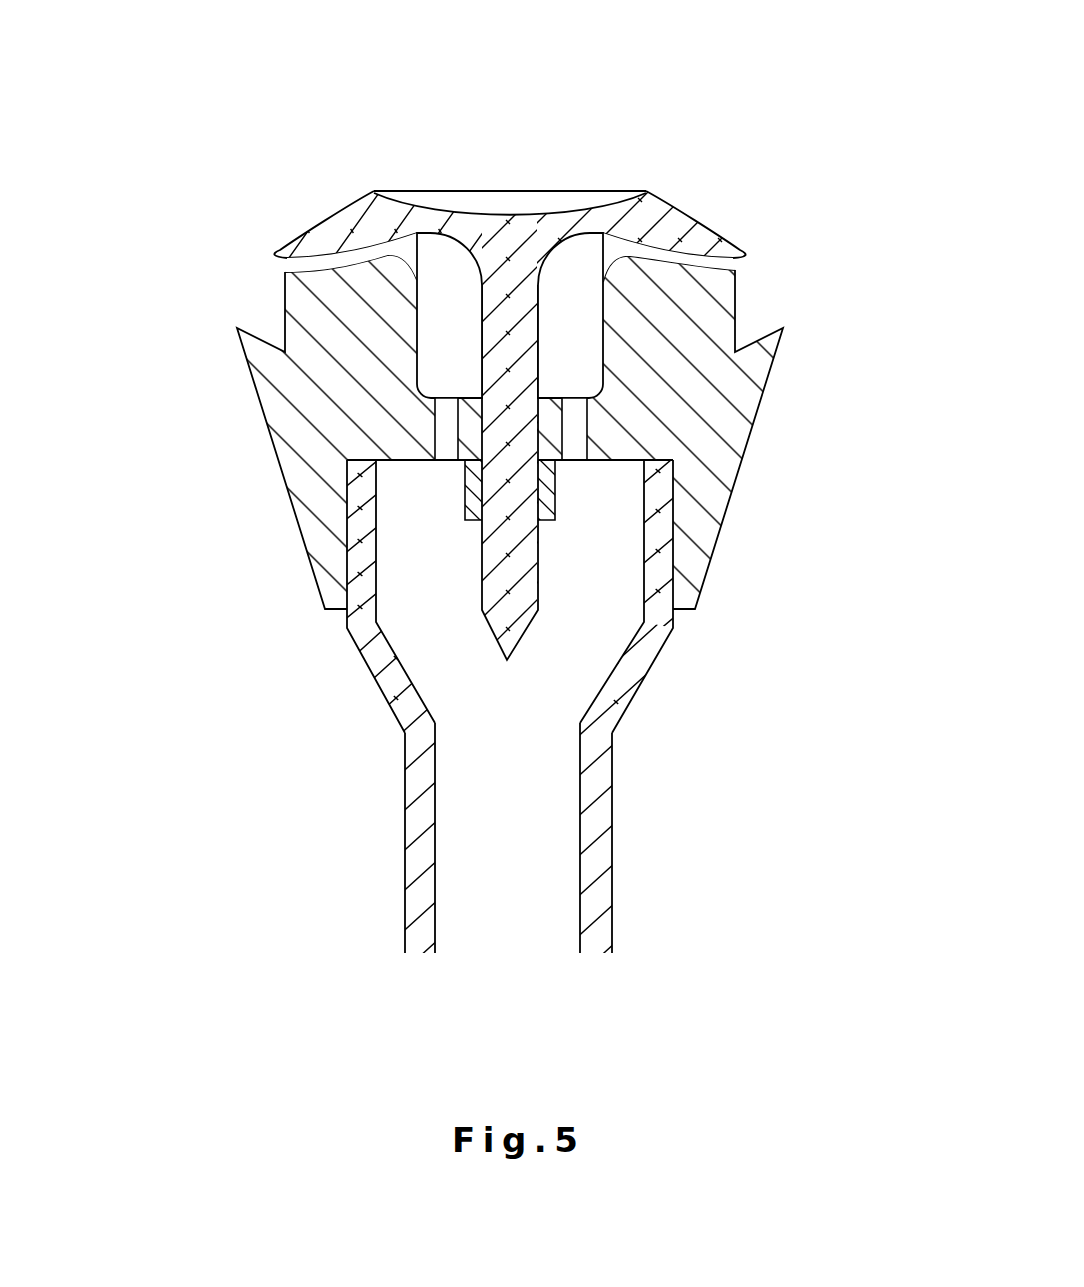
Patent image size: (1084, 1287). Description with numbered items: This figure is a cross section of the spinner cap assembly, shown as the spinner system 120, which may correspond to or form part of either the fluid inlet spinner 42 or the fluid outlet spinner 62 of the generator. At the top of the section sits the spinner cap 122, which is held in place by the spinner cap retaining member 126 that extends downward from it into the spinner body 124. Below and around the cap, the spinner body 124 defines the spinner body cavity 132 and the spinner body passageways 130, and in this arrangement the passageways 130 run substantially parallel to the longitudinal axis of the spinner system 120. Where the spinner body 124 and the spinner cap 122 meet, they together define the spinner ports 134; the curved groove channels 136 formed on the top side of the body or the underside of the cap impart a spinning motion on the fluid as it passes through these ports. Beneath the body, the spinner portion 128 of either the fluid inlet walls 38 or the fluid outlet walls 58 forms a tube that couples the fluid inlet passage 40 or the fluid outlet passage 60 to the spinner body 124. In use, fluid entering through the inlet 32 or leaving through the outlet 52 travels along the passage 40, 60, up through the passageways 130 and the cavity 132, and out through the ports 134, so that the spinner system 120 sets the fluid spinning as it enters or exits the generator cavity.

The spinner system 120 is at (456, 333).
The fluid inlet spinner 42 is at (456, 333).
The fluid outlet spinner 62 is at (456, 333).
The spinner cap 122 is at (502, 362).
The spinner ports 134 is at (502, 226).
The curved groove channels 136 is at (283, 262).
The spinner body cavity 132 is at (578, 292).
The spinner body 124 is at (358, 348).
The spinner body passageways 130 is at (450, 415).
The spinner cap retaining member 126 is at (502, 362).
The spinner portion 128 is at (399, 706).
The fluid inlet walls 38 is at (399, 706).
The fluid outlet walls 58 is at (373, 664).
The fluid inlet passage 40 is at (577, 661).
The fluid outlet passage 60 is at (518, 747).
The inlet 32 is at (451, 886).
The outlet 52 is at (508, 934).